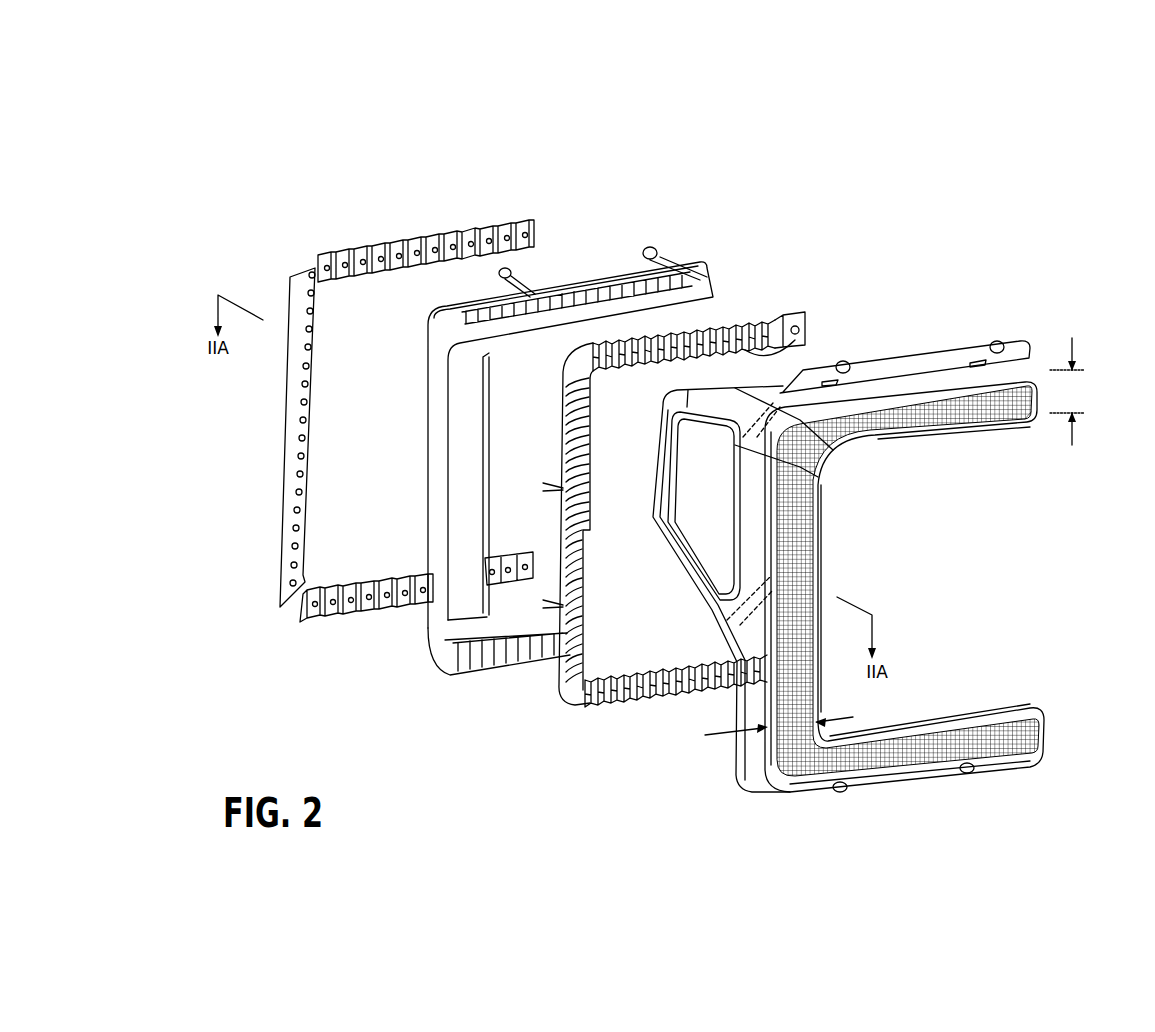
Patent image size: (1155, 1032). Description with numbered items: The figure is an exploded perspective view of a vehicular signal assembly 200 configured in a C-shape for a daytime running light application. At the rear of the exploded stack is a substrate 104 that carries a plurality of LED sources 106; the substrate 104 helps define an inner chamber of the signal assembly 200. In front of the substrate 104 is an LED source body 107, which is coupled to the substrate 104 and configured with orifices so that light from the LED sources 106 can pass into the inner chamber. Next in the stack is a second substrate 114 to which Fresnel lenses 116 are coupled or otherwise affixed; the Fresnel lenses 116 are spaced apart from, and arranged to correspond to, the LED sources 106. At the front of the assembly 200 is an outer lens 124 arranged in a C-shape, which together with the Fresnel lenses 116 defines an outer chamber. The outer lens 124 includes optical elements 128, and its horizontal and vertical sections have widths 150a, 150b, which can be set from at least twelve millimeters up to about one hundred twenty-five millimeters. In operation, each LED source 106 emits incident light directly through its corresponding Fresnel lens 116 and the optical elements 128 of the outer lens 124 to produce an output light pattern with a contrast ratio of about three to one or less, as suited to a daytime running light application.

The vehicular signal assembly 200 is at (836, 177).
The substrate 104 is at (538, 220).
The LED sources 106 is at (516, 224).
The LED source body 107 is at (700, 268).
The substrate 114 is at (800, 313).
The Fresnel lenses 116 is at (807, 353).
The outer lens 124 is at (1033, 380).
The optical elements 128 is at (1010, 420).
The width 150a is at (1073, 357).
The width 150b is at (837, 717).